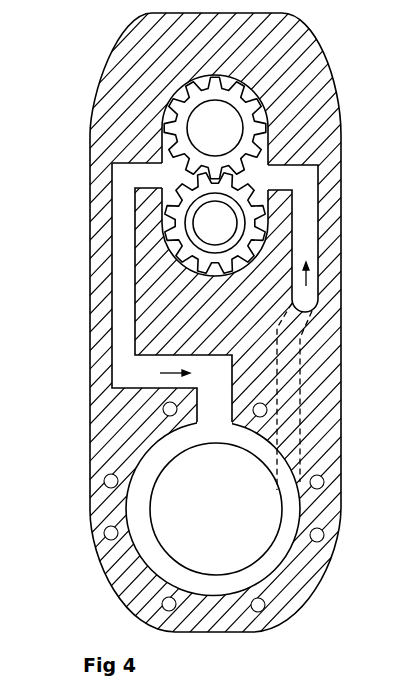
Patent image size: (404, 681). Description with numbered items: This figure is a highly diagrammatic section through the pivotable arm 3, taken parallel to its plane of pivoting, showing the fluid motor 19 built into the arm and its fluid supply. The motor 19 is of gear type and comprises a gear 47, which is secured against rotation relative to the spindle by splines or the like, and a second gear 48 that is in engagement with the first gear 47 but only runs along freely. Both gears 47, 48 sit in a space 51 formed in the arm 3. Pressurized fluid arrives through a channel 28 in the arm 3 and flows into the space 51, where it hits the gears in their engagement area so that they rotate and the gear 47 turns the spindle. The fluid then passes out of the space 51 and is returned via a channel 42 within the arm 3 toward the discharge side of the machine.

The arm 3 is at (351, 288).
The fluid motor 19 is at (167, 80).
The channel 28 is at (300, 372).
The channel 42 is at (122, 373).
The gear 47 is at (247, 132).
The second gear 48 is at (265, 239).
The space 51 is at (257, 183).